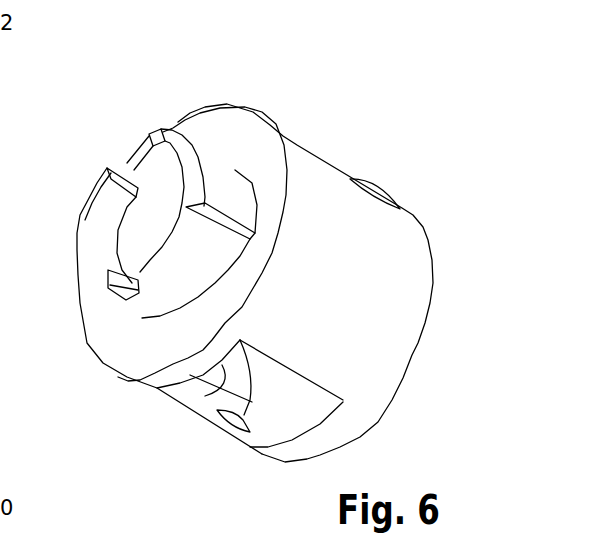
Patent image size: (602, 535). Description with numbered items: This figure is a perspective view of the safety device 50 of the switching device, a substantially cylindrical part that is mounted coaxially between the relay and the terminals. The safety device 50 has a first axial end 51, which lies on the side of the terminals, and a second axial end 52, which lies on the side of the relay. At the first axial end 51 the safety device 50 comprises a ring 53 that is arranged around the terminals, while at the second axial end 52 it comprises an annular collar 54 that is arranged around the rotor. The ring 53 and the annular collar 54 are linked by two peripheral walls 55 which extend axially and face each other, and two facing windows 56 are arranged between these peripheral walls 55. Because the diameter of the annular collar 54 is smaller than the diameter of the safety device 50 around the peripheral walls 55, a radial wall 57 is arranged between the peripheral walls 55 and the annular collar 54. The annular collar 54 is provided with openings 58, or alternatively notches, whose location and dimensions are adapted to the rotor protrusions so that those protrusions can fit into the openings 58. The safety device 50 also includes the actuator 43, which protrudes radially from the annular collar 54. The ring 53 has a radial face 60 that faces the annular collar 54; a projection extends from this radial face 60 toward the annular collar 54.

The safety device 50 is at (375, 92).
The first axial end 51 is at (428, 229).
The actuator 43 is at (226, 201).
The second axial end 52 is at (88, 193).
The ring 53 is at (338, 427).
The annular collar 54 is at (100, 235).
The peripheral walls 55 is at (195, 403).
The windows 56 is at (312, 150).
The radial wall 57 is at (228, 133).
The openings 58 is at (128, 156).
The radial face 60 is at (287, 440).